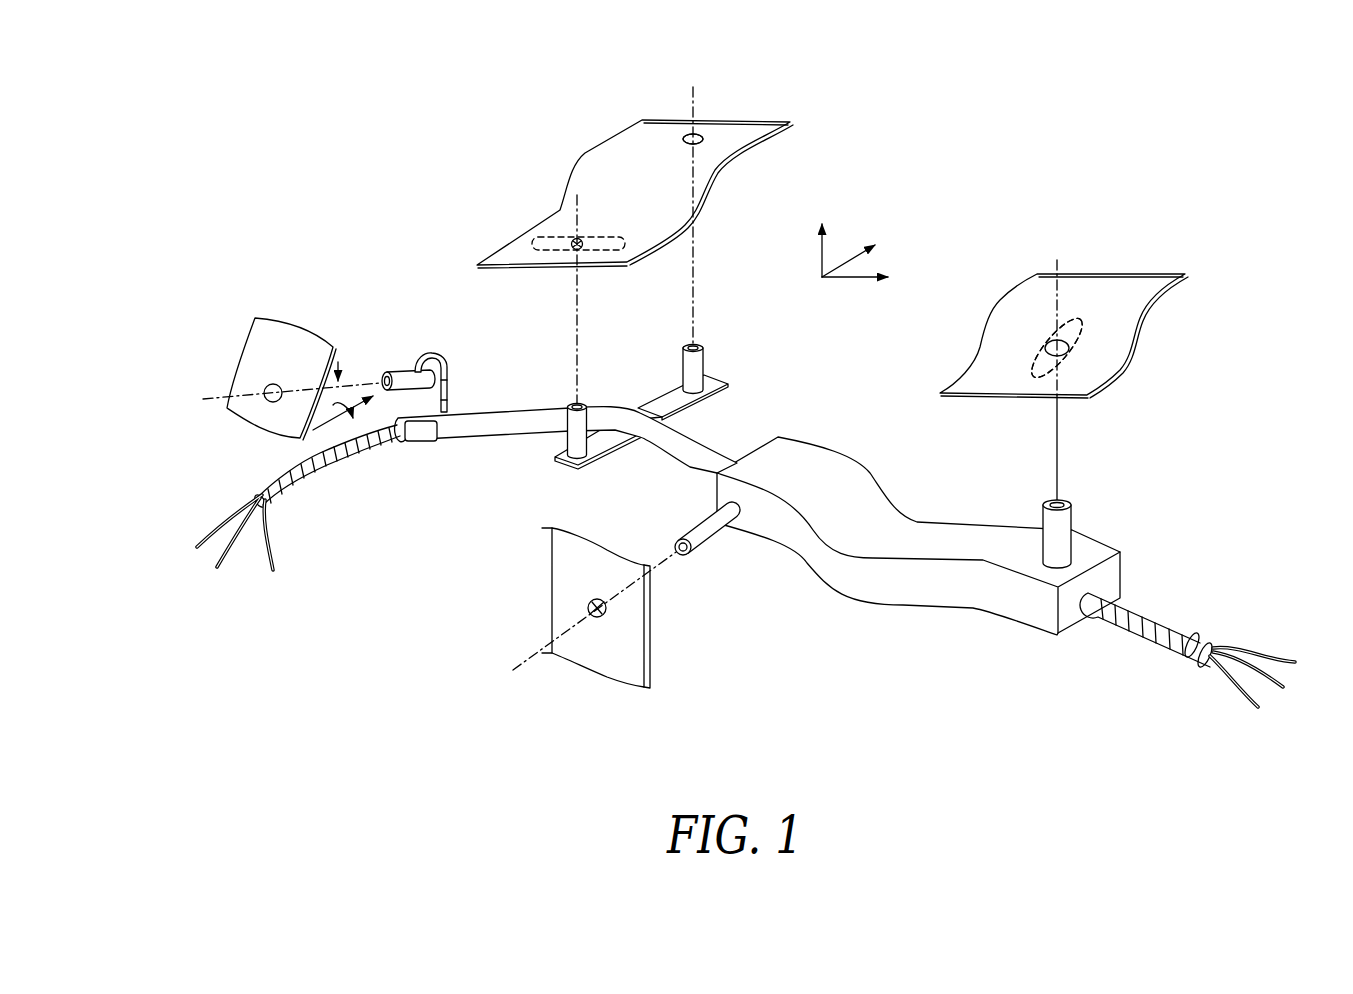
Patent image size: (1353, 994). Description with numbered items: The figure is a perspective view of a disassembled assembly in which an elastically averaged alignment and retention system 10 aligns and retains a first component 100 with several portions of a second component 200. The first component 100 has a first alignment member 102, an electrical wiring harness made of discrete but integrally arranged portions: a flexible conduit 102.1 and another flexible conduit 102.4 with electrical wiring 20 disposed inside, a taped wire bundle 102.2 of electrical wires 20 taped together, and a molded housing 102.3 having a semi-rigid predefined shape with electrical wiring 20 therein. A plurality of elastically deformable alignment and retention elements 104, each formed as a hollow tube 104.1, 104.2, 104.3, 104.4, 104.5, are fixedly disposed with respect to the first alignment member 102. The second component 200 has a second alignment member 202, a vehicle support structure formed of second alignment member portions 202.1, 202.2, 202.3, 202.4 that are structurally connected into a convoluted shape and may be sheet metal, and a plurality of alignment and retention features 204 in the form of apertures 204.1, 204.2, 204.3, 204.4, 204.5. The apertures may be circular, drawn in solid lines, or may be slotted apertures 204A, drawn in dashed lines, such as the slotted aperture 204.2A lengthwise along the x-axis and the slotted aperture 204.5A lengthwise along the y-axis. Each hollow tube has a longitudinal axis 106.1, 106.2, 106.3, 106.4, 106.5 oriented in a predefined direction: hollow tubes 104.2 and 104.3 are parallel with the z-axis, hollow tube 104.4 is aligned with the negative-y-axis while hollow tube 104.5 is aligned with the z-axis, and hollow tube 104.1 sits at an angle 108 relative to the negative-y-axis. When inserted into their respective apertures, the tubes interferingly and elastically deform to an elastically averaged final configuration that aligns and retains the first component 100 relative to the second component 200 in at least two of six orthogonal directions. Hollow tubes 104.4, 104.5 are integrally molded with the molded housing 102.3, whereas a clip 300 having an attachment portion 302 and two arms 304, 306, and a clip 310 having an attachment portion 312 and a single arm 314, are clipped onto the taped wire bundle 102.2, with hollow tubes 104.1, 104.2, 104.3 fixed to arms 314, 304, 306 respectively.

The elastically averaged alignment and retention system 10 is at (1007, 178).
The electrical wiring 20 is at (230, 527).
The first component 100 is at (910, 612).
The first alignment member 102 is at (1140, 592).
The flexible conduit 102.1 is at (282, 487).
The taped wire bundle 102.2 is at (500, 437).
The molded housing 102.3 is at (860, 603).
The flexible conduit 102.4 is at (1150, 628).
The elastically deformable alignment and retention element 104 is at (1077, 502).
The hollow tube 104.1 is at (405, 368).
The hollow tube 104.2 is at (566, 428).
The hollow tube 104.3 is at (705, 352).
The hollow tube 104.4 is at (713, 542).
The hollow tube 104.5 is at (1075, 530).
The longitudinal axis 106.1 is at (220, 400).
The longitudinal axis 106.2 is at (578, 357).
The longitudinal axis 106.3 is at (693, 287).
The longitudinal axis 106.4 is at (537, 653).
The longitudinal axis 106.5 is at (1053, 300).
The angle 108 is at (333, 405).
The second component 200 is at (603, 137).
The second alignment member 202 is at (715, 188).
The second alignment member portion 202.1 is at (263, 318).
The second alignment member portion 202.2 is at (772, 118).
The second alignment member portion 202.3 is at (1160, 272).
The second alignment member portion 202.4 is at (550, 590).
The alignment and retention feature 204 is at (683, 132).
The aperture 204.1 is at (267, 395).
The aperture 204.2 is at (575, 240).
The slotted aperture 204.2A is at (552, 242).
The aperture 204.3 is at (695, 110).
The aperture 204.4 is at (598, 620).
The aperture 204.5 is at (1046, 348).
The slotted aperture 204.5A is at (1133, 360).
The slotted aperture 204A is at (1077, 313).
The clip 300 is at (725, 382).
The attachment portion 302 is at (642, 437).
The arm 304 is at (597, 453).
The arm 306 is at (700, 413).
The clip 310 is at (423, 353).
The attachment portion 312 is at (428, 442).
The arm 314 is at (448, 378).